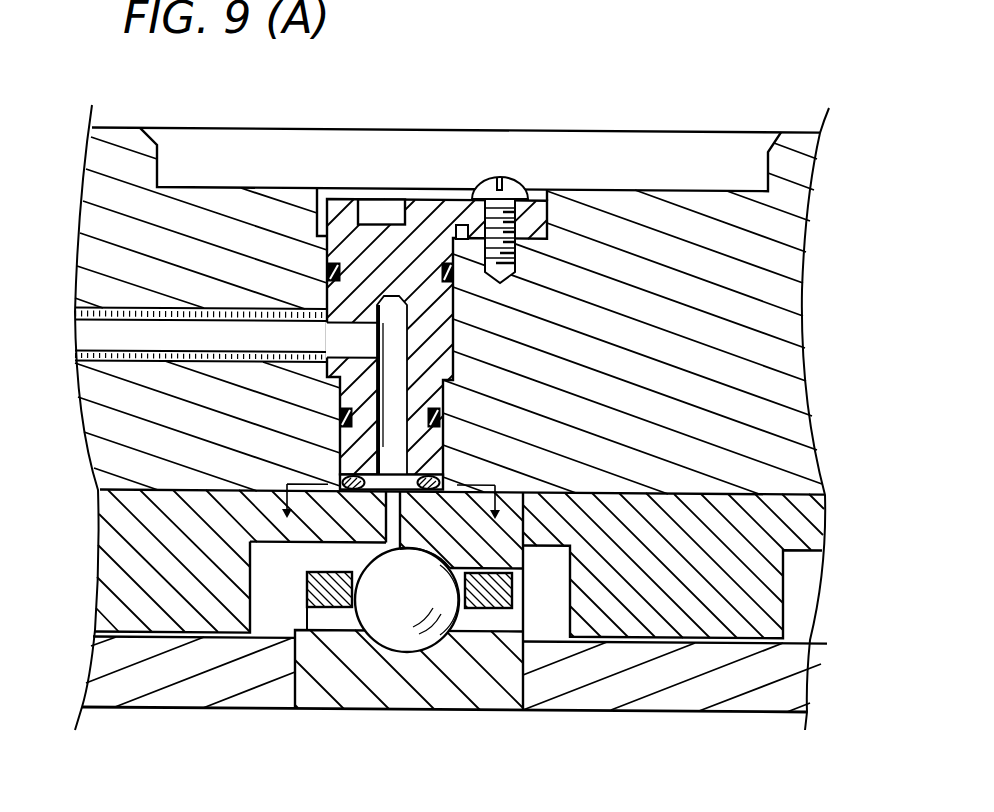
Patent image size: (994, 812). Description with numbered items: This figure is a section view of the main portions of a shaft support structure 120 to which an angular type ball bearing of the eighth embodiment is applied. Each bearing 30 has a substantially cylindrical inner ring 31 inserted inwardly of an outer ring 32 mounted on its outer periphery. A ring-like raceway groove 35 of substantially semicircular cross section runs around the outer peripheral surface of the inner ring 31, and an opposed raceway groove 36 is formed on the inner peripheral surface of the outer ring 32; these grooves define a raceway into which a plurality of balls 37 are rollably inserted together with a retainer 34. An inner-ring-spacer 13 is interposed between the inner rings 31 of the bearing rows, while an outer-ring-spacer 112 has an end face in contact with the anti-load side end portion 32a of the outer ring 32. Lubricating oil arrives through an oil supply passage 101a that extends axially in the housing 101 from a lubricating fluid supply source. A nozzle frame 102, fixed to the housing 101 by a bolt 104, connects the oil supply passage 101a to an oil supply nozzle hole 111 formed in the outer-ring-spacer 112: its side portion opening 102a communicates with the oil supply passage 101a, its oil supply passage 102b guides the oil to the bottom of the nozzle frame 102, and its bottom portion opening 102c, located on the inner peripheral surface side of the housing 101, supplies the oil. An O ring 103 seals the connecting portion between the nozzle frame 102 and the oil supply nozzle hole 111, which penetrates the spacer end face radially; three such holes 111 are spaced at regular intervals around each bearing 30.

The inner-ring-spacer 13 is at (245, 702).
The bearing 30 is at (526, 489).
The inner ring 31 is at (403, 703).
The outer ring 32 is at (498, 543).
The anti-load side end portion 32a is at (393, 523).
The retainer 34 is at (307, 588).
The raceway groove 35 is at (423, 653).
The raceway groove 36 is at (400, 550).
The balls 37 is at (393, 620).
The housing 101 is at (772, 325).
The oil supply passage 101a is at (140, 340).
The nozzle frame 102 is at (410, 243).
The side portion opening 102a is at (327, 342).
The oil supply passage 102b is at (389, 298).
The bottom portion opening 102c is at (412, 484).
The O ring 103 is at (348, 482).
The bolt 104 is at (518, 180).
The oil supply nozzle hole 111 is at (327, 543).
The outer-ring-spacer 112 is at (143, 532).
The shaft support structure 120 is at (618, 172).